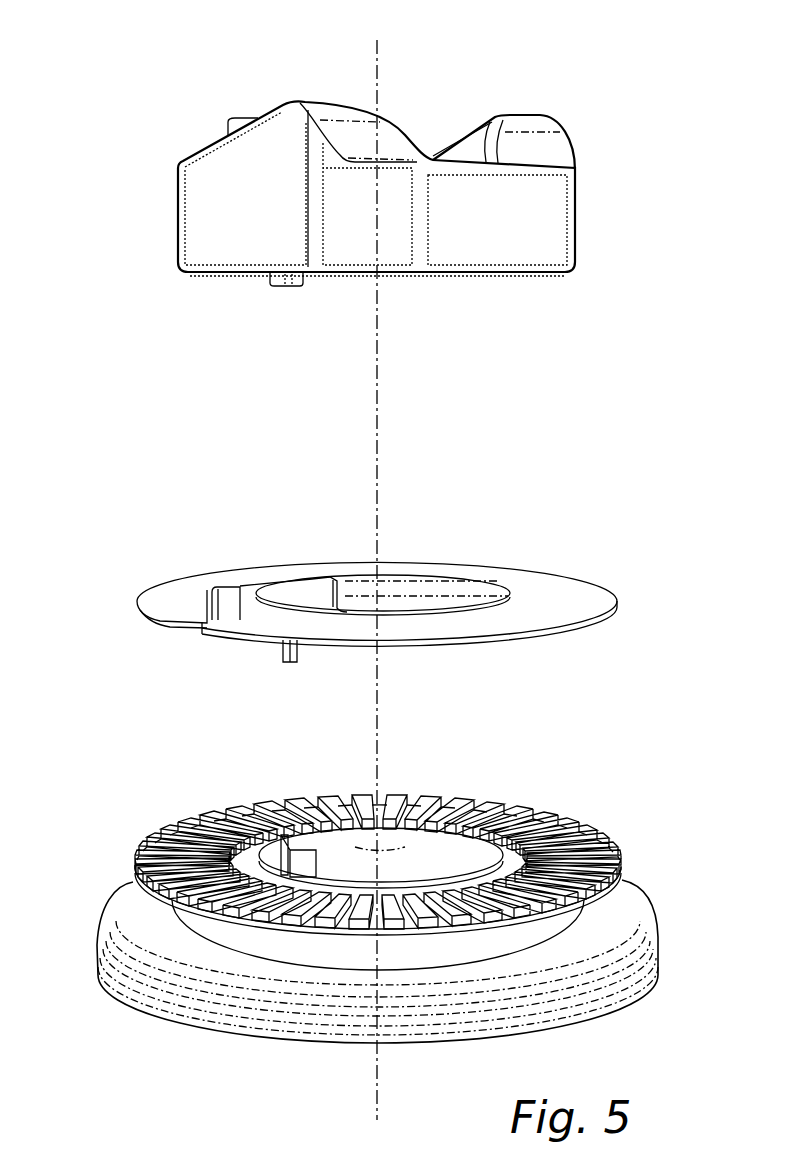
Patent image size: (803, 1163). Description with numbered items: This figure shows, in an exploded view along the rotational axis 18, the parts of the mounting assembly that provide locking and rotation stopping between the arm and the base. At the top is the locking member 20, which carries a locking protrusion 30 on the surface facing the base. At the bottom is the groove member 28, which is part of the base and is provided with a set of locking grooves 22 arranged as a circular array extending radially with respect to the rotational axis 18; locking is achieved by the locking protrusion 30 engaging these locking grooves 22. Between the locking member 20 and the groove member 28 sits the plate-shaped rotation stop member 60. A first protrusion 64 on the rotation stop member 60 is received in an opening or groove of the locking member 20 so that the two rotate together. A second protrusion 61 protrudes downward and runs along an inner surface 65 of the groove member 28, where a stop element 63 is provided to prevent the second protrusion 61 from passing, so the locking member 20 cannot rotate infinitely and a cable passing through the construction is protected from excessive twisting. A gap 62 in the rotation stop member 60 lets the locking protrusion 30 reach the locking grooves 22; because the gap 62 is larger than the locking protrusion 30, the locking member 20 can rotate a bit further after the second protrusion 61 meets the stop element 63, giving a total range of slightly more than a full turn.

The rotational axis 18 is at (377, 68).
The locking member 20 is at (542, 215).
The locking protrusion 30 is at (285, 287).
The rotation stop member 60 is at (572, 600).
The gap 62 is at (300, 595).
The first protrusion 64 is at (227, 603).
The second protrusion 61 is at (285, 658).
The groove member 28 is at (92, 812).
The set of locking grooves 22 is at (190, 806).
The inner surface 65 is at (360, 848).
The stop element 63 is at (323, 840).